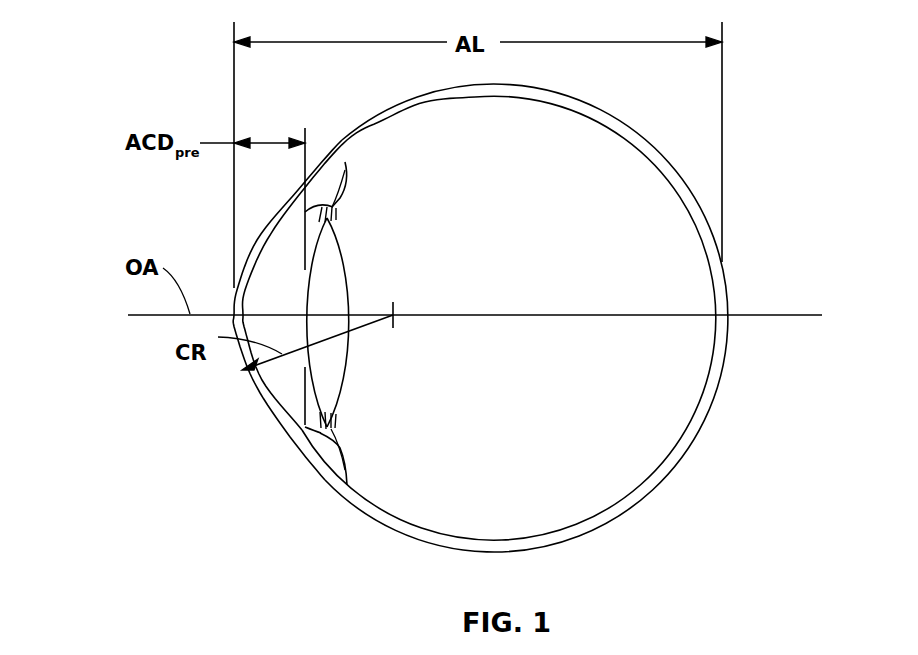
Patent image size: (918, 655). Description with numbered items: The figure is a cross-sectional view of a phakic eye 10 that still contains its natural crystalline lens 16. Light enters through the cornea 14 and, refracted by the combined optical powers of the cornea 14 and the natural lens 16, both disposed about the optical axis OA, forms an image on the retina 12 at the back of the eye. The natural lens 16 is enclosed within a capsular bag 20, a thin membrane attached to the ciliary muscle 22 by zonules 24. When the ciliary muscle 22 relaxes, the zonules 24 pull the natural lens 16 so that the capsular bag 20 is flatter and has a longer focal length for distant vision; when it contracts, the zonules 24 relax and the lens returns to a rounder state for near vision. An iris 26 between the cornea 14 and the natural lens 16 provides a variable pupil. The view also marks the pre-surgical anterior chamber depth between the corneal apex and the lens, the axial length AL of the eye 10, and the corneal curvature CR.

The eye 10 is at (190, 52).
The retina 12 is at (705, 402).
The cornea 14 is at (250, 386).
The natural crystalline lens 16 is at (348, 250).
The capsular bag 20 is at (348, 350).
The ciliary muscle 22 is at (345, 463).
The zonules 24 is at (332, 417).
The iris 26 is at (305, 392).